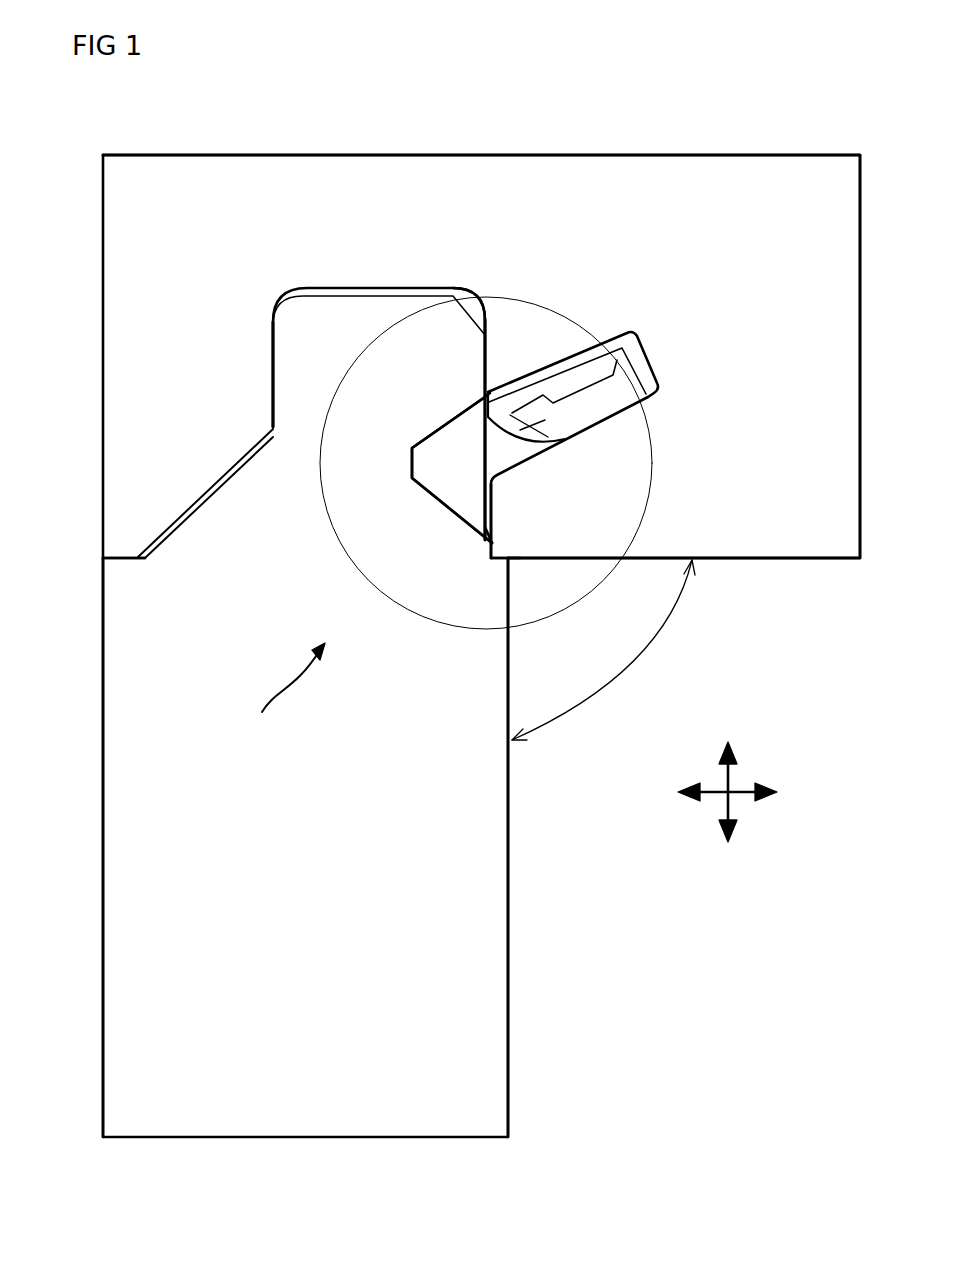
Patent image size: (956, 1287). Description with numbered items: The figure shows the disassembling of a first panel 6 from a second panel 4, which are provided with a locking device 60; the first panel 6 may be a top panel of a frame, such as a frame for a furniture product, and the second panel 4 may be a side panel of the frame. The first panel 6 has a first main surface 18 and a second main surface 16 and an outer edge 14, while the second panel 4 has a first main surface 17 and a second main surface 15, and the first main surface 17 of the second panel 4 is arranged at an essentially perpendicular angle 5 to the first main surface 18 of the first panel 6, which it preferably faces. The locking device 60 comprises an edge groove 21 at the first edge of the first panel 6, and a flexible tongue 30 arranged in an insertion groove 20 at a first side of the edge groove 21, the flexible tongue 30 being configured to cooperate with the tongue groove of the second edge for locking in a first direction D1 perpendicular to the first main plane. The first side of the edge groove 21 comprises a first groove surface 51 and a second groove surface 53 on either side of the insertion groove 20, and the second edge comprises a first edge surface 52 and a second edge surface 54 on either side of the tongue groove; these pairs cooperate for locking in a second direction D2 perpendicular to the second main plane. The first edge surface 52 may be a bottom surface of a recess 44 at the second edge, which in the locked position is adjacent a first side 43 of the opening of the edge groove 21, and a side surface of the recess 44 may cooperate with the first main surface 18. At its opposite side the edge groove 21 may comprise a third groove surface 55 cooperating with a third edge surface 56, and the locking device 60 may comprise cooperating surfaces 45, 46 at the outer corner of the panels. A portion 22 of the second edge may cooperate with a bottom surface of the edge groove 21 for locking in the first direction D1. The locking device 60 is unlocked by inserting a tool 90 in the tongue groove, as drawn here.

The second panel 4 is at (135, 820).
The angle 5 is at (603, 650).
The first panel 6 is at (733, 185).
The outer edge 14 is at (103, 310).
The second main surface 15 is at (103, 812).
The second main surface 16 is at (597, 152).
The first main surface 17 is at (508, 870).
The first main surface 18 is at (728, 560).
The insertion groove 20 is at (508, 458).
The edge groove 21 is at (390, 288).
The portion 22 is at (342, 328).
The flexible tongue 30 is at (618, 333).
The first side 43 is at (496, 555).
The recess 44 is at (491, 557).
The cooperating surface 45 is at (122, 557).
The cooperating surface 46 is at (124, 558).
The first groove surface 51 is at (492, 505).
The first edge surface 52 is at (487, 553).
The second groove surface 53 is at (487, 345).
The second edge surface 54 is at (483, 360).
The third groove surface 55 is at (272, 355).
The third edge surface 56 is at (274, 353).
The locking device 60 is at (273, 695).
The tool 90 is at (452, 478).
The first direction D1 is at (734, 775).
The second direction D2 is at (749, 793).